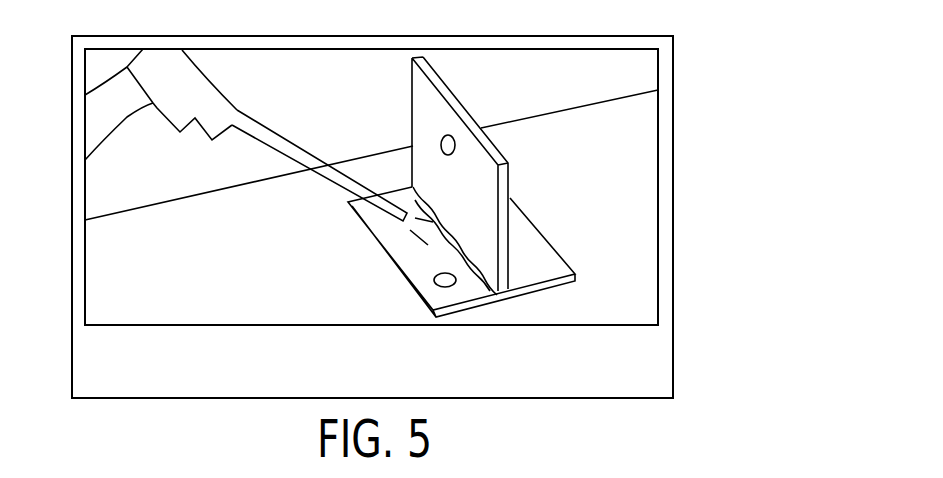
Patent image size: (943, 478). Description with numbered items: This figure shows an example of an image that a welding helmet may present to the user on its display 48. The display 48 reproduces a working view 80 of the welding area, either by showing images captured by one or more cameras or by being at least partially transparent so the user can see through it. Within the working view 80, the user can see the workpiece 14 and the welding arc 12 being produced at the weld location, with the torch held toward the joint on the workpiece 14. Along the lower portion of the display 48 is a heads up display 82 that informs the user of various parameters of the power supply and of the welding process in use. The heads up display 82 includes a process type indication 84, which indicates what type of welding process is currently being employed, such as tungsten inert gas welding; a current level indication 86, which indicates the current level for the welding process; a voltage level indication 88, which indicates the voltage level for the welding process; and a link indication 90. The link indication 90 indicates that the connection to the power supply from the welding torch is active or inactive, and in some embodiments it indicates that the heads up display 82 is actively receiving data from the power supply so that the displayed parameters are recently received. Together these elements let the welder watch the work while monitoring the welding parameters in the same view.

The display 48 is at (713, 45).
The working view 80 is at (87, 189).
The welding arc 12 is at (400, 233).
The workpiece 14 is at (542, 247).
The heads up display 82 is at (668, 342).
The process type indication 84 is at (140, 393).
The current level indication 86 is at (292, 393).
The voltage level indication 88 is at (450, 395).
The link indication 90 is at (603, 395).